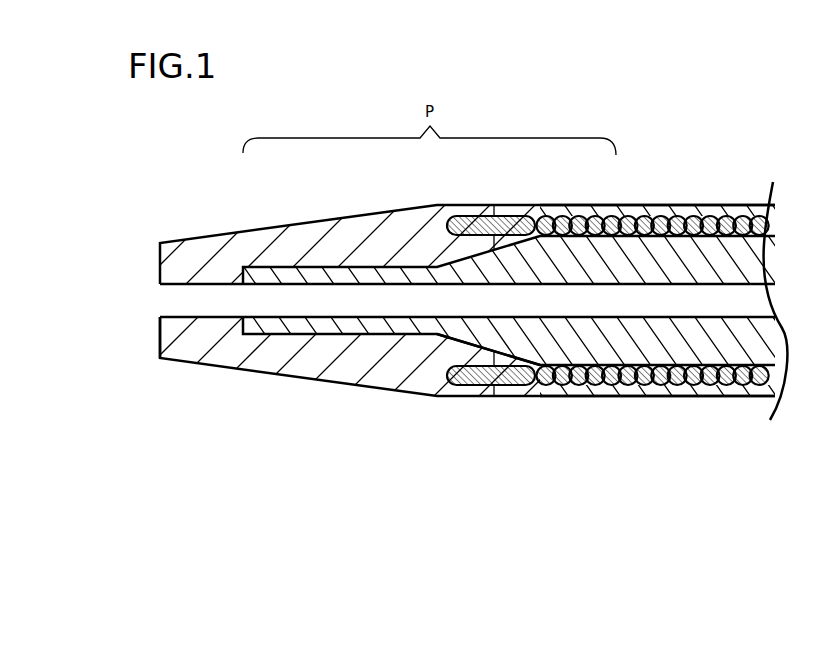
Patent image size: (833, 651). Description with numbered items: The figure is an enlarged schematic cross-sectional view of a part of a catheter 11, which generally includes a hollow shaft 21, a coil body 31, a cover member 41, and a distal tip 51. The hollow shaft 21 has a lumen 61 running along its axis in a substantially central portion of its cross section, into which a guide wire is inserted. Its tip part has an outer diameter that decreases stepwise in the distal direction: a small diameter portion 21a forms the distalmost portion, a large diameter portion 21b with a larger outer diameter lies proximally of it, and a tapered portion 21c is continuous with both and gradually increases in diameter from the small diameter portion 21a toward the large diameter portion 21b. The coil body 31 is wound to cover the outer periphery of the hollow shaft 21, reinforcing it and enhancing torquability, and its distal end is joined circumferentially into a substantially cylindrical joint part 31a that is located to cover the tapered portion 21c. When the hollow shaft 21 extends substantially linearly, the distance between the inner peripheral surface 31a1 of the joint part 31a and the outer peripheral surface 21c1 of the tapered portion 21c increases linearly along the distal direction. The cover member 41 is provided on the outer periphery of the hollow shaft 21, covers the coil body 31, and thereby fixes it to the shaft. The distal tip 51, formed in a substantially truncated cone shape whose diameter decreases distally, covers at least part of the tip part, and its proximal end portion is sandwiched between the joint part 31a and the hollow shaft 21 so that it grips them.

The catheter 11 is at (727, 101).
The hollow shaft 21 is at (312, 265).
The small diameter portion 21a is at (307, 337).
The large diameter portion 21b is at (625, 357).
The tapered portion 21c is at (455, 229).
The outer peripheral surface of the tapered portion 21c1 is at (462, 346).
The coil body 31 is at (612, 218).
The joint part 31a is at (502, 218).
The inner peripheral surface of the joint part 31a1 is at (462, 368).
The cover member 41 is at (720, 210).
The distal tip 51 is at (218, 366).
The lumen 61 is at (238, 297).